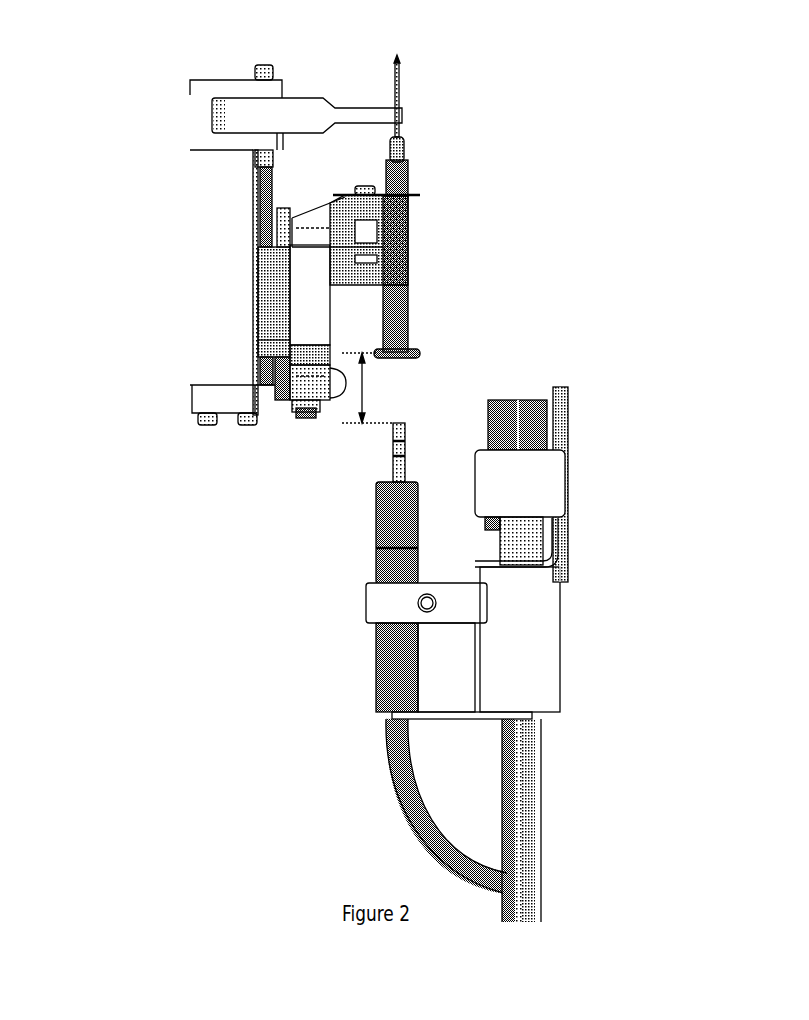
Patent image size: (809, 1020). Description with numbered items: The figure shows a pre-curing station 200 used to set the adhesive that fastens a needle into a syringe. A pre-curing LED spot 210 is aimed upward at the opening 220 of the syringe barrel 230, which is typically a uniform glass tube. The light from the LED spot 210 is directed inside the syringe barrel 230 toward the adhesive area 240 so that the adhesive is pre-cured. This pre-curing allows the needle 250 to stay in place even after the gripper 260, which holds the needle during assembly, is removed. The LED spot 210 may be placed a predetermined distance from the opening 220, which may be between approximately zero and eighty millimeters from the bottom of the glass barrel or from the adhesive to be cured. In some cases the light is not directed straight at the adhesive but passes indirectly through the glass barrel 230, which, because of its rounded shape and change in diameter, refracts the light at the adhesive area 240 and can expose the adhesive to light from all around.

The pre-curing station 200 is at (683, 209).
The pre-curing LED spot 210 is at (354, 497).
The opening of the syringe barrel 220 is at (415, 355).
The syringe barrel 230 is at (413, 252).
The adhesive area 240 is at (419, 135).
The needle 250 is at (398, 72).
The gripper 260 is at (343, 108).